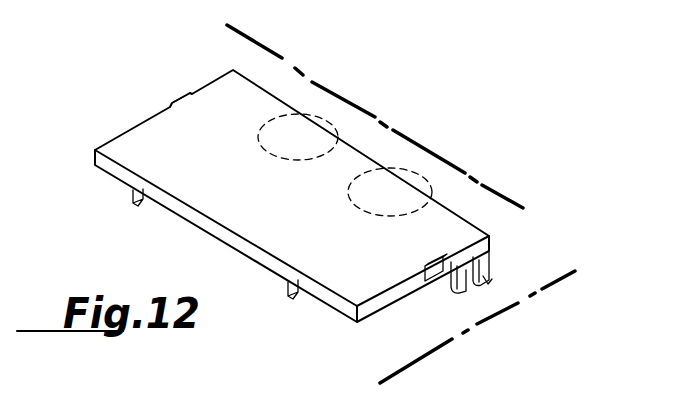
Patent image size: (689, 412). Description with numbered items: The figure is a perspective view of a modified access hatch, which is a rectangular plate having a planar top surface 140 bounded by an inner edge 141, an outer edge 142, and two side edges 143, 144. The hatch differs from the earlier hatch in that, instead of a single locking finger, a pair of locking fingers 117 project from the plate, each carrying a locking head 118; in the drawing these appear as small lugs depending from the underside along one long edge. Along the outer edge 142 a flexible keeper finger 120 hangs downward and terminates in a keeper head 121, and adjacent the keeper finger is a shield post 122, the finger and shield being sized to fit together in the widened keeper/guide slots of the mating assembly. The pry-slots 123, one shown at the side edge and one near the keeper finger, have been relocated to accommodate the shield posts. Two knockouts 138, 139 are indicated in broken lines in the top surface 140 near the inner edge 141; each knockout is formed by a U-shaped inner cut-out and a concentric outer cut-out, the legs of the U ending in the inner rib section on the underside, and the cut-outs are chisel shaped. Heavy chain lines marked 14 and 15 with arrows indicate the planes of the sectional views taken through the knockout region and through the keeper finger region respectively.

The section line 14- 14 is at (252, 23).
The section line 15- 15 is at (403, 372).
The locking finger 117 is at (131, 195).
The locking head 118 is at (132, 204).
The flexible keeper finger 120 is at (488, 261).
The keeper head 121 is at (489, 283).
The shield post 122 is at (458, 286).
The pry-slot 123 is at (184, 98).
The knockout 138 is at (259, 133).
The knock-out 139 is at (362, 205).
The planar top surface 140 is at (352, 283).
The inner edge 141 is at (362, 154).
The outer edge 142 is at (212, 228).
The side edge 143 is at (113, 135).
The side edge 144 is at (380, 307).